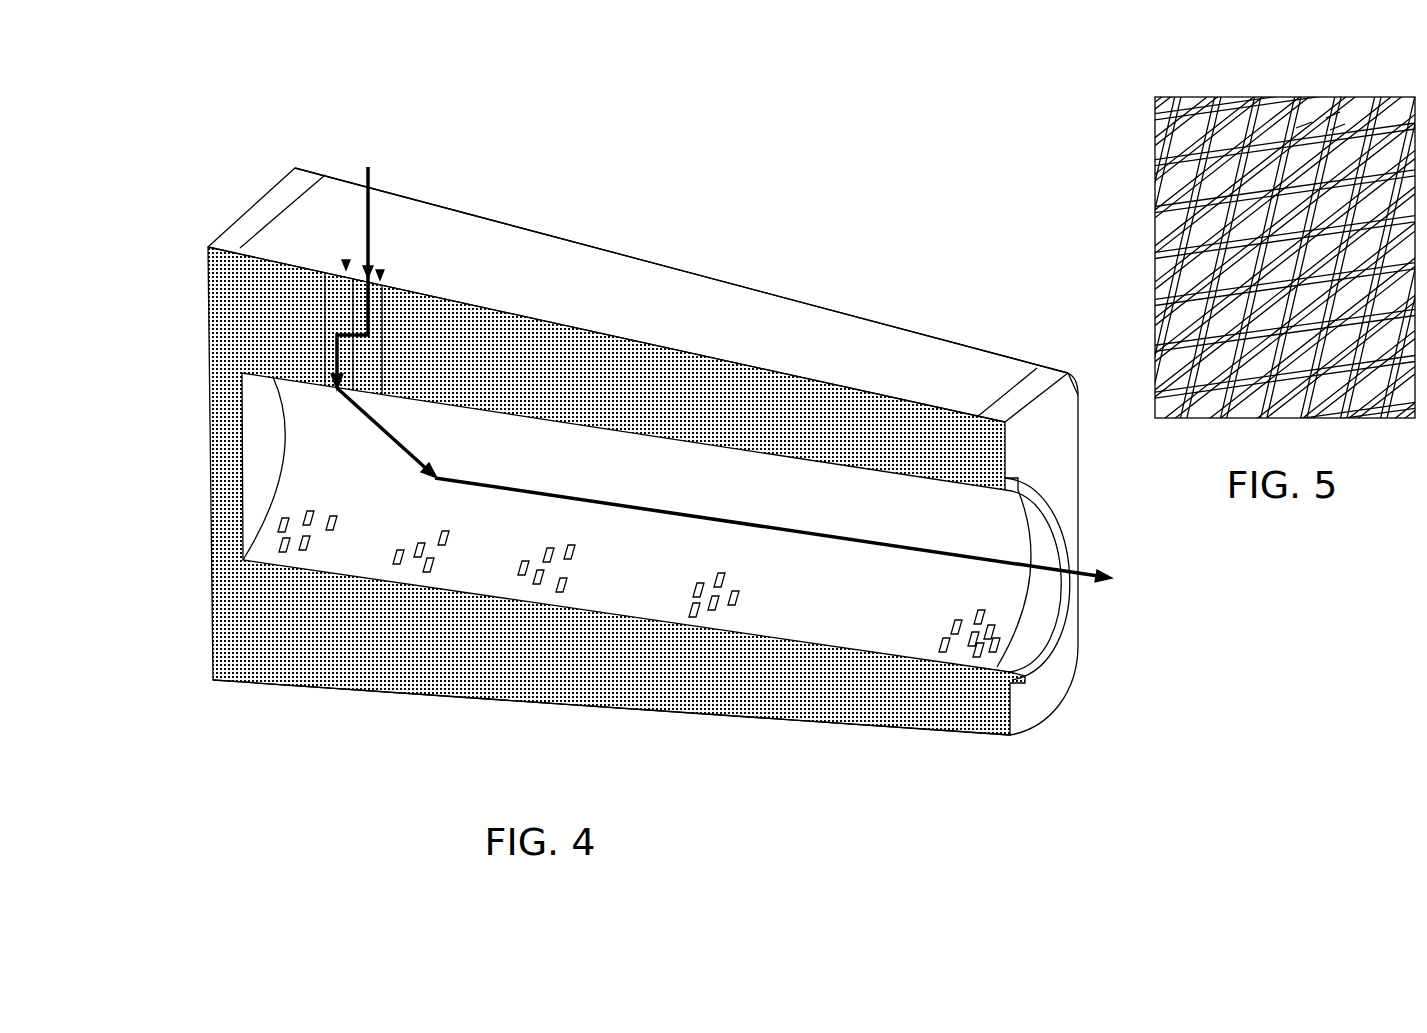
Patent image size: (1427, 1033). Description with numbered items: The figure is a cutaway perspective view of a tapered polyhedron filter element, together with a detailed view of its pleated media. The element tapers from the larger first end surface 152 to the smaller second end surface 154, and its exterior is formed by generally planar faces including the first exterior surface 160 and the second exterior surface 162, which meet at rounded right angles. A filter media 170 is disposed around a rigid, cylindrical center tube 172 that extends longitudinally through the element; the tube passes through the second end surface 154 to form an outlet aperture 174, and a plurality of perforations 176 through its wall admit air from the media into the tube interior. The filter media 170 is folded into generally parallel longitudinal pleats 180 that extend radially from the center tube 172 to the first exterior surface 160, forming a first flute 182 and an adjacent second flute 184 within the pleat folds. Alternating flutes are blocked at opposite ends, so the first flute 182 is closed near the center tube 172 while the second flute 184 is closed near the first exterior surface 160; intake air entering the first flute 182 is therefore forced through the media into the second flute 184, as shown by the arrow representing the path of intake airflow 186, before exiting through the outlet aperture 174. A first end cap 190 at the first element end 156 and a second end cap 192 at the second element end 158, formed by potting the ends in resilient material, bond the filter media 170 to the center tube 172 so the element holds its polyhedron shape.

In FIG. 4, the first end surface 152 is at (208, 343).
In FIG. 4, the second end surface 154 is at (1048, 425).
In FIG. 4, the first element end 156 is at (237, 268).
In FIG. 4, the second element end 158 is at (968, 438).
In FIG. 4, the first exterior surface 160 is at (675, 297).
In FIG. 4, the second exterior surface 162 is at (641, 722).
In FIG. 4, the filter media 170 is at (558, 357).
In FIG. 5, the filter media 170 is at (1252, 85).
In FIG. 4, the center tube 172 is at (873, 467).
In FIG. 4, the outlet aperture 174 is at (1033, 617).
In FIG. 4, the perforations 176 is at (978, 652).
In FIG. 4, the pleats 180 is at (343, 268).
In FIG. 5, the pleats 180 is at (1336, 125).
In FIG. 4, the first flute 182 is at (380, 270).
In FIG. 5, the first flute 182 is at (1332, 102).
In FIG. 4, the second flute 184 is at (346, 262).
In FIG. 5, the second flute 184 is at (1303, 125).
In FIG. 4, the path of intake airflow 186 is at (370, 168).
In FIG. 4, the first end cap 190 is at (255, 222).
In FIG. 4, the second end cap 192 is at (1038, 382).